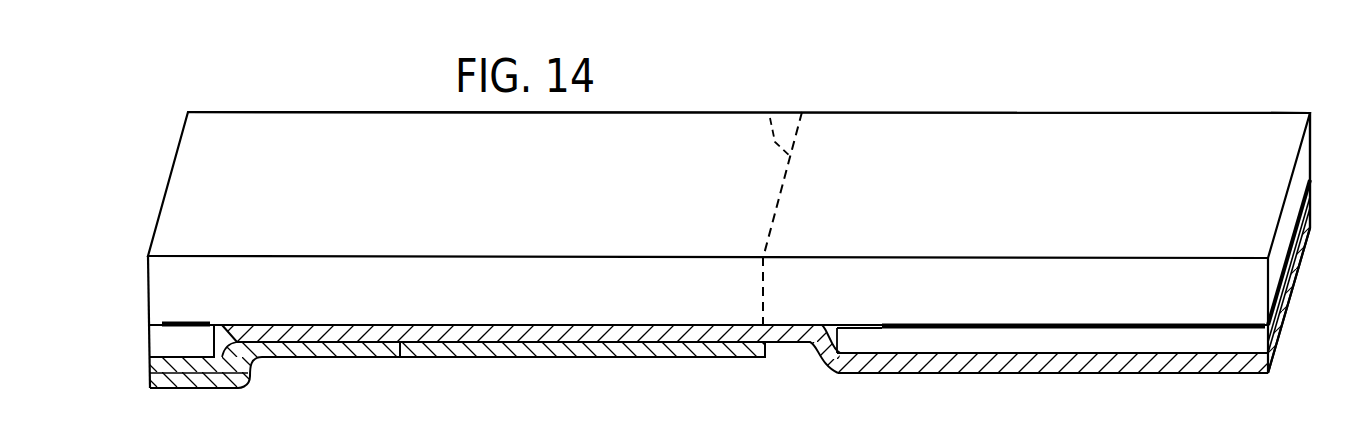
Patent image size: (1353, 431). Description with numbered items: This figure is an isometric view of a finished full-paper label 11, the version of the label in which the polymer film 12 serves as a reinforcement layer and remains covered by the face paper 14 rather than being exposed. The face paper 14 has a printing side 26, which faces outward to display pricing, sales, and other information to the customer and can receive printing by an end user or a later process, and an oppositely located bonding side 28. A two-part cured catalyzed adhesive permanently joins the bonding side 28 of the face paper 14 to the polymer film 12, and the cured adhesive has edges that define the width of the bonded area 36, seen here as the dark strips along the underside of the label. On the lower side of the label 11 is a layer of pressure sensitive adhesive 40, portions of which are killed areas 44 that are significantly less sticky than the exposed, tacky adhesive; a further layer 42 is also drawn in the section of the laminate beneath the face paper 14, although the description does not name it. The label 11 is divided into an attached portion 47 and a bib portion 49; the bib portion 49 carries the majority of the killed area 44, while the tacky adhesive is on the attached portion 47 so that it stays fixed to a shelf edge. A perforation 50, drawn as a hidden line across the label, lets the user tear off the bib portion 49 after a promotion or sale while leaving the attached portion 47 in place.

The label 11 is at (332, 48).
The polymer film 12 is at (1233, 340).
The face paper 14 is at (161, 272).
The printing side 26 is at (228, 256).
The bonding side 28 is at (237, 323).
The bonded area 36 is at (180, 338).
The pressure sensitive adhesive 40 is at (158, 365).
The bottom layer 42 is at (402, 352).
The killed areas 44 is at (340, 368).
The attached portion 47 is at (1198, 80).
The bib portion 49 is at (393, 96).
The perforation 50 is at (777, 112).